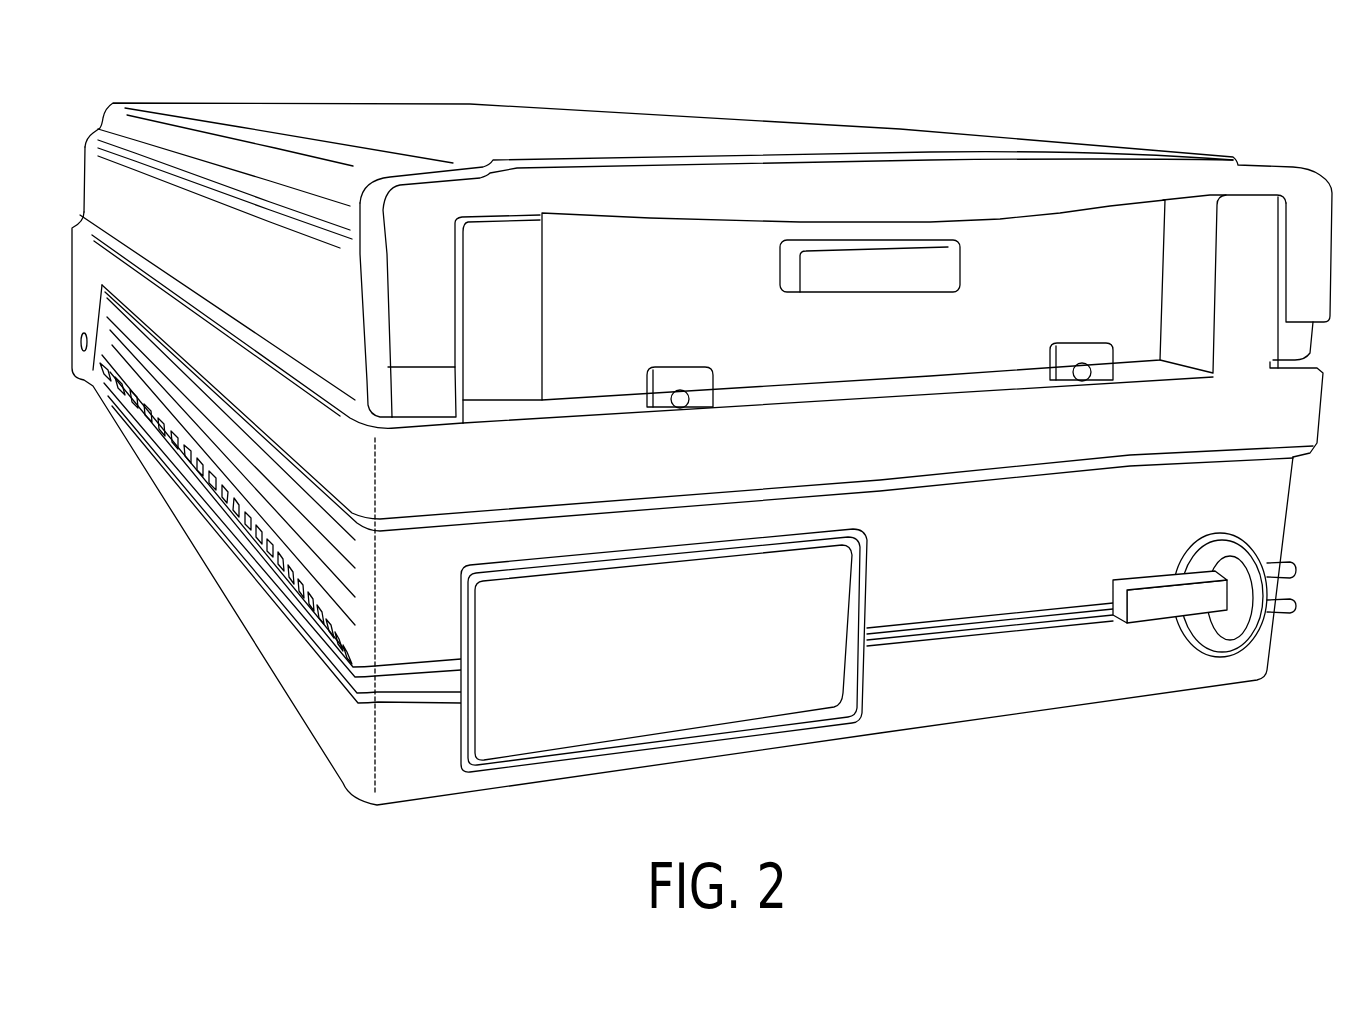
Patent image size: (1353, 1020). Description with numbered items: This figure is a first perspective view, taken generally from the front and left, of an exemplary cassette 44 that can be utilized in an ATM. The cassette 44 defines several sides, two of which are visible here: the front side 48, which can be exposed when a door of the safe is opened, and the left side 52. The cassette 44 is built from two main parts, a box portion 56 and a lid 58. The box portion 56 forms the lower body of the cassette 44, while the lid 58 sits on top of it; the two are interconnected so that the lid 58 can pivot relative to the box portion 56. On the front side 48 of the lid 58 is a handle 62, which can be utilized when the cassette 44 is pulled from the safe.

The cassette 44 is at (697, 529).
The front side 48 is at (678, 308).
The left side 52 is at (229, 263).
The box portion 56 is at (245, 613).
The lid 58 is at (708, 230).
The handle 62 is at (940, 182).